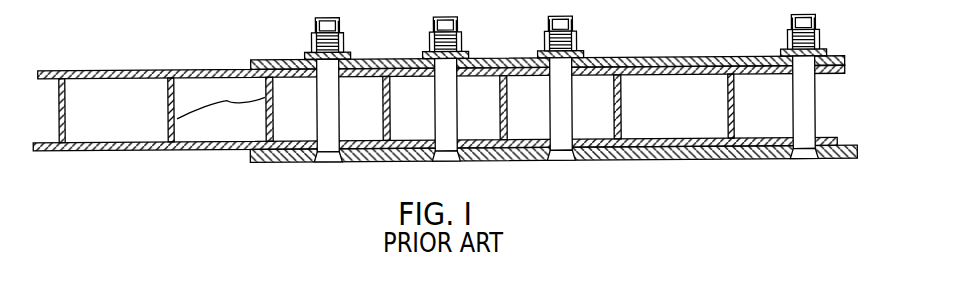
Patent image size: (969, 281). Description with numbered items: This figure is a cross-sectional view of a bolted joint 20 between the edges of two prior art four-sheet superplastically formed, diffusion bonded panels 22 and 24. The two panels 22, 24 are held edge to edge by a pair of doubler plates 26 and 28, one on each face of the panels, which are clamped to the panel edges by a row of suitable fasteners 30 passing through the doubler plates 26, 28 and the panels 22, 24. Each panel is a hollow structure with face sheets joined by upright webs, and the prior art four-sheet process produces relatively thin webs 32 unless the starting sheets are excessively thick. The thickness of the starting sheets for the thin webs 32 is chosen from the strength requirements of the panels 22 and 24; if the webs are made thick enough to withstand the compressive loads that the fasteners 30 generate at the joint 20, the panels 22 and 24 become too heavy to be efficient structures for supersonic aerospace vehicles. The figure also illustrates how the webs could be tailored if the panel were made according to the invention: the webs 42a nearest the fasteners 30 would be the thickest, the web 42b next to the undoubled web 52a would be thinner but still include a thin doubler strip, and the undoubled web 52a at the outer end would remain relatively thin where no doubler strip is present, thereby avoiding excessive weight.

The joint 20 is at (456, 111).
The panel 22 is at (221, 66).
The panel 24 is at (833, 76).
The doubler plate 26 is at (830, 58).
The doubler plate 28 is at (838, 161).
The fasteners 30 is at (323, 161).
The thin webs 32 is at (227, 99).
The webs 42a is at (265, 119).
The web 42b is at (168, 103).
The undoubled web 52a is at (72, 92).